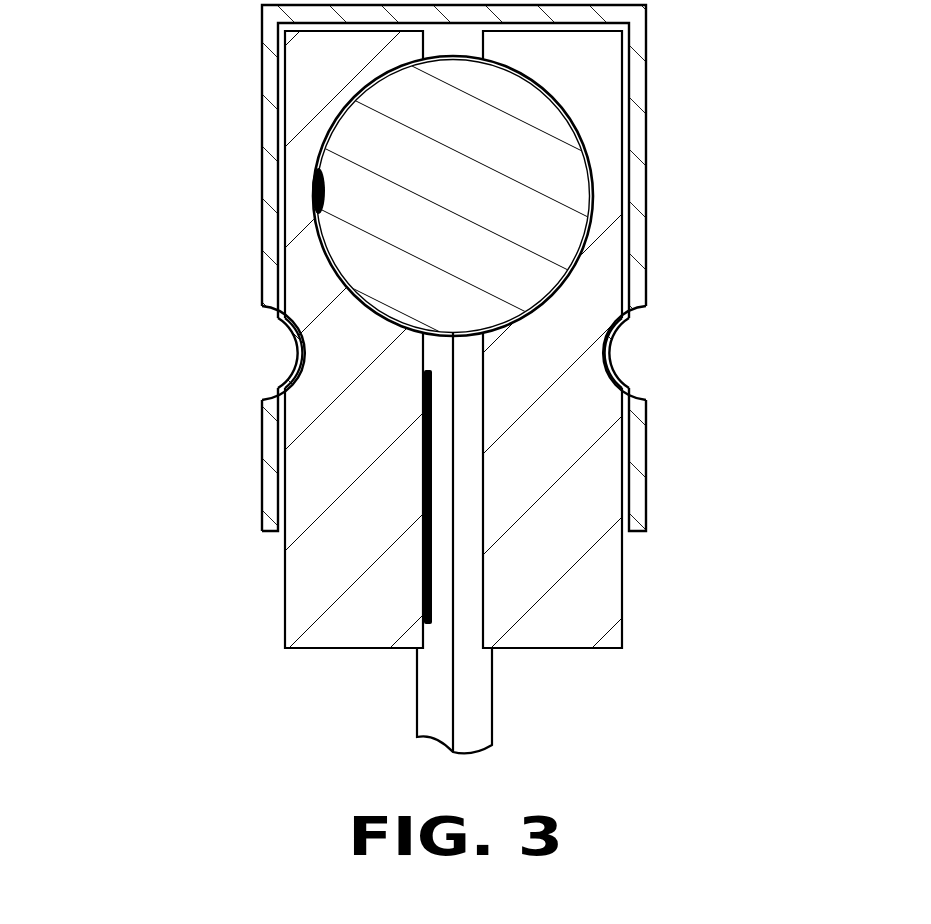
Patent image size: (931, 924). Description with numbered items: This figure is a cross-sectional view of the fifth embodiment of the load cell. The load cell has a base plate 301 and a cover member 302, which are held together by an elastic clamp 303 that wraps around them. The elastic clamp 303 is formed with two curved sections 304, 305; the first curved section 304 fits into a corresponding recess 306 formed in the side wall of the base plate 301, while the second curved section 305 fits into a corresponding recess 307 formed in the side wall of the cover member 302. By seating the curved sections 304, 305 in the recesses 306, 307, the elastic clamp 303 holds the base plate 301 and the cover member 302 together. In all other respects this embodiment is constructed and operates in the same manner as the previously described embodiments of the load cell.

The base plate 301 is at (285, 604).
The cover member 302 is at (624, 582).
The elastic clamp 303 is at (262, 190).
The curved section 304 is at (298, 350).
The curved section 305 is at (623, 336).
The recess 306 is at (300, 388).
The recess 307 is at (606, 378).